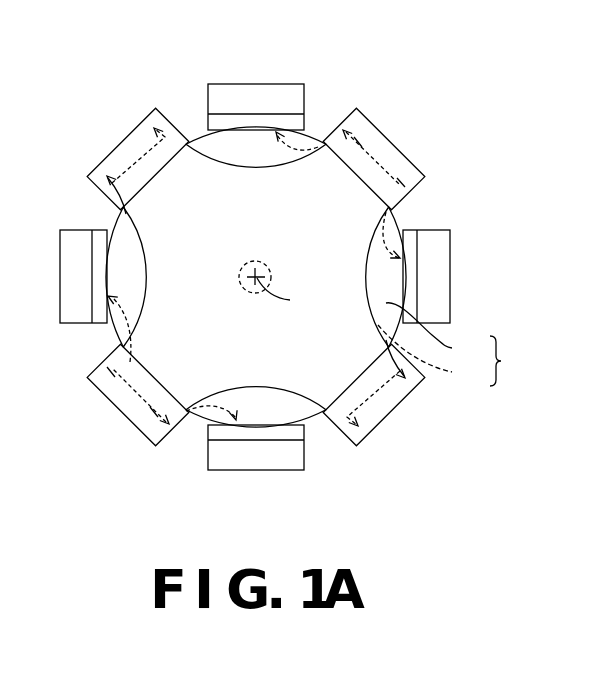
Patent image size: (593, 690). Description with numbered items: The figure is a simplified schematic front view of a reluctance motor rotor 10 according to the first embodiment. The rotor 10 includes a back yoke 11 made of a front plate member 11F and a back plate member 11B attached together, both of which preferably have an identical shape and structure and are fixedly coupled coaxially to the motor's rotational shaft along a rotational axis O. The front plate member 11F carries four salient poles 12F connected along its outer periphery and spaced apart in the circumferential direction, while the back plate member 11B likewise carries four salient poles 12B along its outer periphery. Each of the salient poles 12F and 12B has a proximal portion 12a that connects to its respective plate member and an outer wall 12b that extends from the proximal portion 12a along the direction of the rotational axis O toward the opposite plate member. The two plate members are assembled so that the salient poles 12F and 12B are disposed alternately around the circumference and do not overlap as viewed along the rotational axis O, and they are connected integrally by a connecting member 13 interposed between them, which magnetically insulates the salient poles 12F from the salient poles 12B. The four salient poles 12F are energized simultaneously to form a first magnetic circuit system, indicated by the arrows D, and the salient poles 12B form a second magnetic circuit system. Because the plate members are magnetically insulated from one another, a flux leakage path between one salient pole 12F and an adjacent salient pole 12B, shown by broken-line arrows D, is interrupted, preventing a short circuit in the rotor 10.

The reluctance motor rotor 10 is at (186, 100).
The back yoke 11 is at (507, 361).
The front plate member 11F is at (434, 331).
The back plate member 11B is at (431, 354).
The salient pole 12B is at (360, 42).
The salient pole 12F is at (120, 85).
The proximal portion 12a is at (300, 120).
The outer wall 12b is at (287, 92).
The connecting member 13 is at (245, 263).
The rotational axis O is at (283, 297).
The arrows D is at (256, 277).